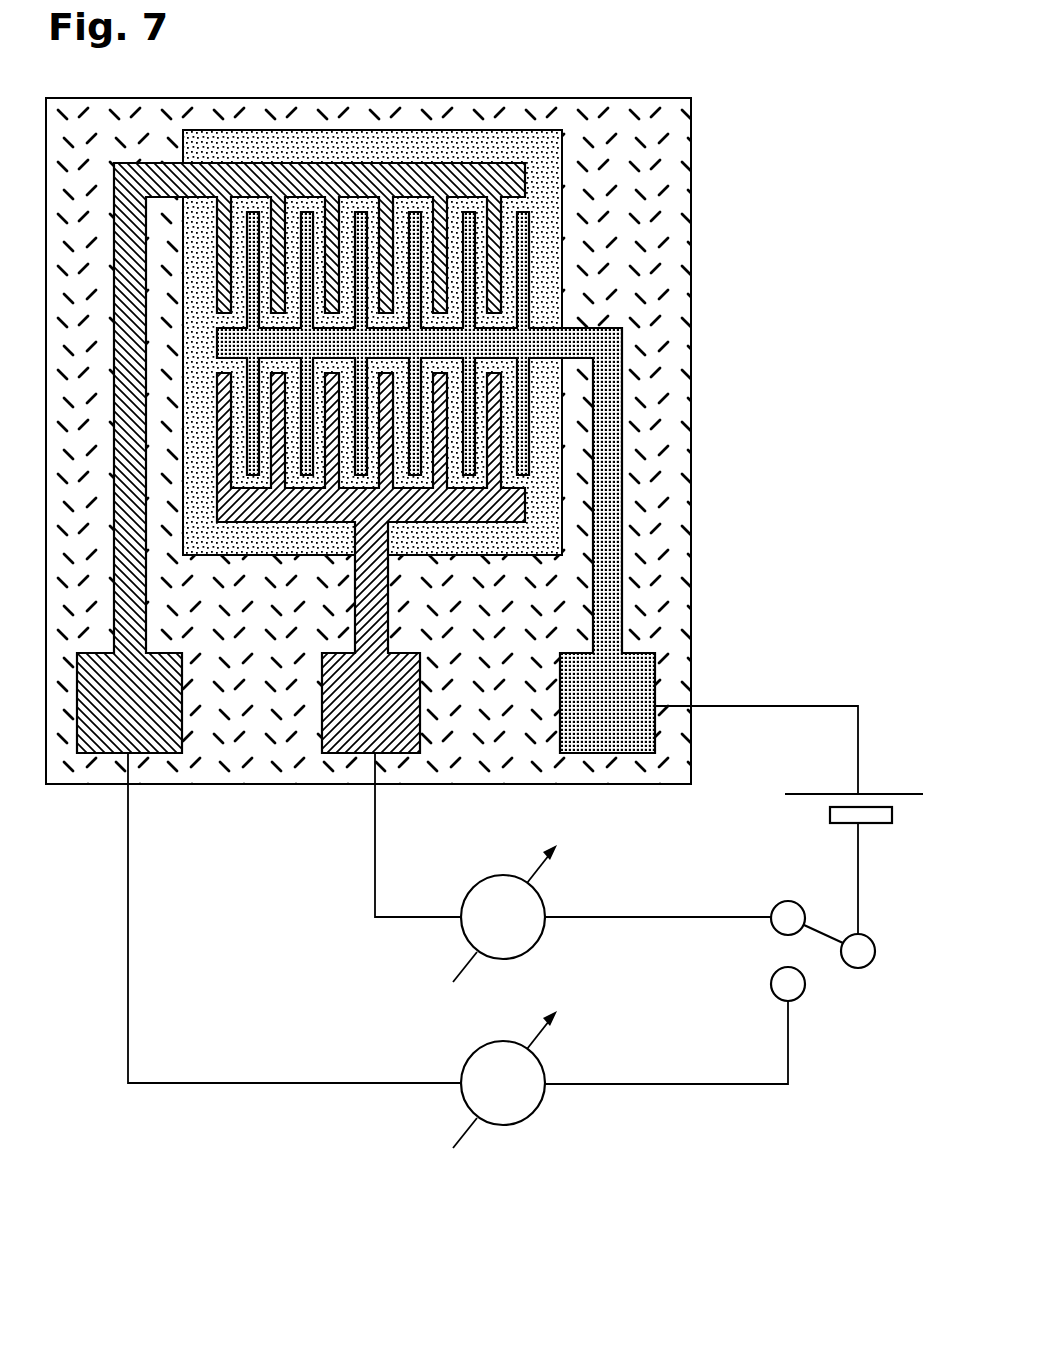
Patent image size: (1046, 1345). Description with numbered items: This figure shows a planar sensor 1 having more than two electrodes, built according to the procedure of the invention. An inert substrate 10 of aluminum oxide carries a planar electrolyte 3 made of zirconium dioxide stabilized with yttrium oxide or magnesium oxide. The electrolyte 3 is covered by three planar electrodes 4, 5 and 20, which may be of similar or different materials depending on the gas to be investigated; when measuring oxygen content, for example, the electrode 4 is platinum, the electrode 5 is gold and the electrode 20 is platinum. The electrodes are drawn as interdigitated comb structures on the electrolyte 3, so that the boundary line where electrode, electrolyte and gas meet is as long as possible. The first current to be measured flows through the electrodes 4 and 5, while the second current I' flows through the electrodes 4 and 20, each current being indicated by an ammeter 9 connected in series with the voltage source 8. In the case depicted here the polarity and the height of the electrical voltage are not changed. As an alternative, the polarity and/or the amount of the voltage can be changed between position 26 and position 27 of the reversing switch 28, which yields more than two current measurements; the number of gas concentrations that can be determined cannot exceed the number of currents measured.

The gas sensor element 1 is at (432, 407).
The inert substrate 10 is at (643, 250).
The electrode 20 is at (525, 177).
The electrolyte 3 is at (556, 462).
The electrode 4 is at (625, 335).
The electrode 5 is at (497, 507).
The voltage source 8 is at (897, 794).
The ammeter 9 is at (587, 1146).
The position of the reversing switch 26 is at (773, 902).
The position of the reversing switch 27 is at (775, 998).
The reversing switch 28 is at (838, 990).